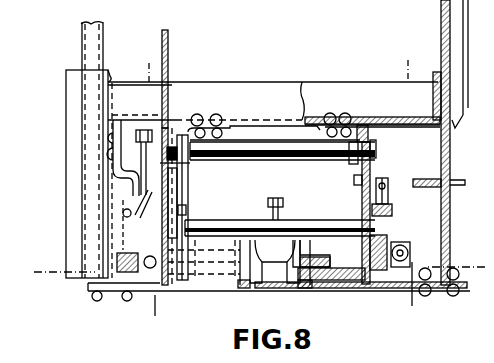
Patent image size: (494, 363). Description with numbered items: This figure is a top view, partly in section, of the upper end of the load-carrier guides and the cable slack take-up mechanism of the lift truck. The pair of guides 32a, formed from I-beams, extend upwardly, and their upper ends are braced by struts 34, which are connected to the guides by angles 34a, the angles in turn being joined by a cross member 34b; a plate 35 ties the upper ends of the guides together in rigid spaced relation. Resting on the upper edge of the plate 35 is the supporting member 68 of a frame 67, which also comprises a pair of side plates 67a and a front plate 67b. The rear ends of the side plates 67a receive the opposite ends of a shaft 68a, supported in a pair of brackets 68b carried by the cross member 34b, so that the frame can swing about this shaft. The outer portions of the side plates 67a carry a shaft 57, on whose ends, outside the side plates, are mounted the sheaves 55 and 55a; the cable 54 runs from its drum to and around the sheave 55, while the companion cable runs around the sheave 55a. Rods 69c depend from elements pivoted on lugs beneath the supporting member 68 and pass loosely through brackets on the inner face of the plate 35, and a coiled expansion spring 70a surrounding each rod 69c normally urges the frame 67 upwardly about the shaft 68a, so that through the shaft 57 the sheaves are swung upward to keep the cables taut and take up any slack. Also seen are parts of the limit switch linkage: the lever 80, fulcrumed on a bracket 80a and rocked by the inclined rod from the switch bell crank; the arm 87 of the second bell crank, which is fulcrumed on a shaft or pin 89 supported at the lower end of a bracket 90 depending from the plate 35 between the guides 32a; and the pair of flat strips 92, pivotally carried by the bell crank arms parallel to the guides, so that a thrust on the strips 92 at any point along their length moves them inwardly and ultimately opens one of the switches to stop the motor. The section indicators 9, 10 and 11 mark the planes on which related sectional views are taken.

The struts 34 is at (82, 47).
The cable 54 is at (169, 52).
The section line 11 is at (148, 63).
The section line 10 is at (407, 60).
The section line 9 is at (34, 272).
The cross member 34b is at (377, 118).
The angles 34a is at (448, 166).
The guides 32a is at (413, 193).
The sheave 55a is at (394, 174).
The depending rod 69c is at (398, 233).
The coiled expansion spring 70a is at (406, 247).
The frame 67 is at (362, 199).
The side plates 67a is at (362, 181).
The front plate 67b is at (361, 282).
The supporting member 68 is at (176, 290).
The shaft 68a is at (272, 163).
The brackets 68b is at (193, 172).
The sheave 55 is at (184, 198).
The shaft 57 is at (226, 224).
The arm 87 is at (281, 216).
The shaft or pin 89 is at (295, 246).
The bracket 90 is at (277, 287).
The flat strips 92 is at (245, 283).
The plate 35 is at (432, 292).
The bracket 80a is at (113, 174).
The lever 80 is at (132, 199).